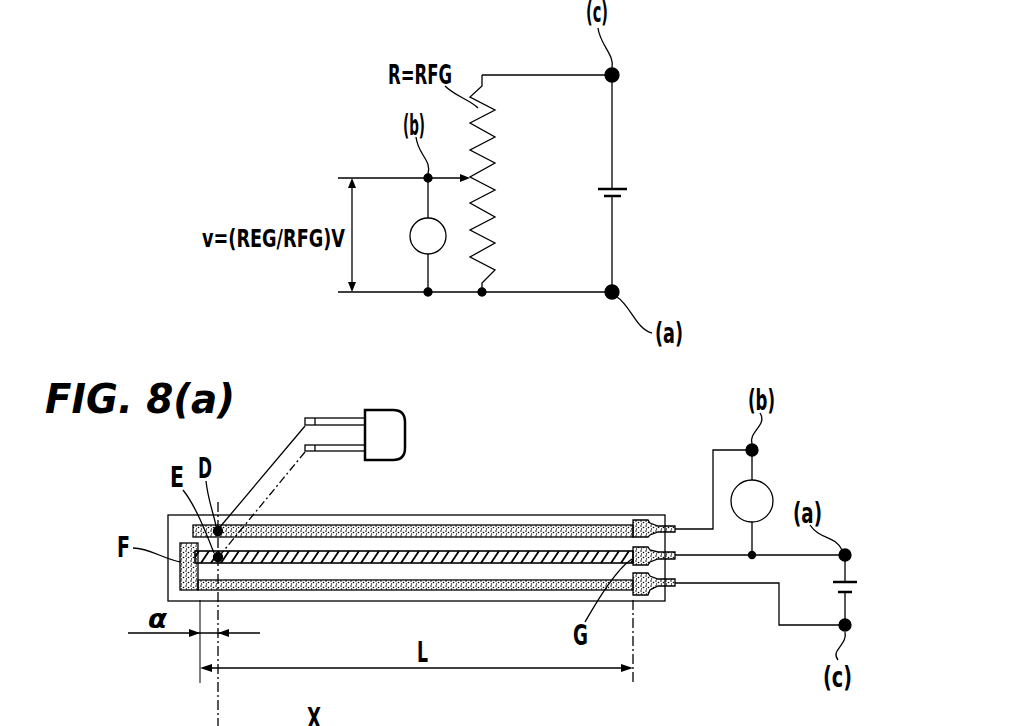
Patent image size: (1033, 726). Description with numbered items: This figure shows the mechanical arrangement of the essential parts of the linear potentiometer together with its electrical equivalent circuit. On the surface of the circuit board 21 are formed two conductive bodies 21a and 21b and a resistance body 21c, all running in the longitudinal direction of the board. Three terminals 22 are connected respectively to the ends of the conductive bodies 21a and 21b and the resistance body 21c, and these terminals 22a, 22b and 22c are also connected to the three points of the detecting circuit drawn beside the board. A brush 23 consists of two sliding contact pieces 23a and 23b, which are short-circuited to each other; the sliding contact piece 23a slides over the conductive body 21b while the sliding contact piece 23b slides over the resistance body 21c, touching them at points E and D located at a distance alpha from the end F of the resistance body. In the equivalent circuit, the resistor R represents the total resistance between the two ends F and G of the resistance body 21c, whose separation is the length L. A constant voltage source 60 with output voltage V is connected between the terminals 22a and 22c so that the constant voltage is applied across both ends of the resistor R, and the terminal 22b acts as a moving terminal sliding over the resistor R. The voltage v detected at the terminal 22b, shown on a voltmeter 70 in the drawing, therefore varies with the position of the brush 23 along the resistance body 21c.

The circuit board 21 is at (168, 578).
The conductive body 21a is at (455, 582).
The conductive body 21b is at (553, 530).
The resistance body 21c is at (505, 554).
The terminals 22 is at (710, 619).
The terminal 22a is at (677, 557).
The terminal 22b is at (677, 531).
The terminal 22c is at (667, 622).
The brush 23 is at (380, 434).
The sliding contact piece 23a is at (343, 418).
The sliding contact piece 23b is at (345, 452).
The constant voltage source 60 is at (630, 190).
The voltmeter 70 is at (445, 248).